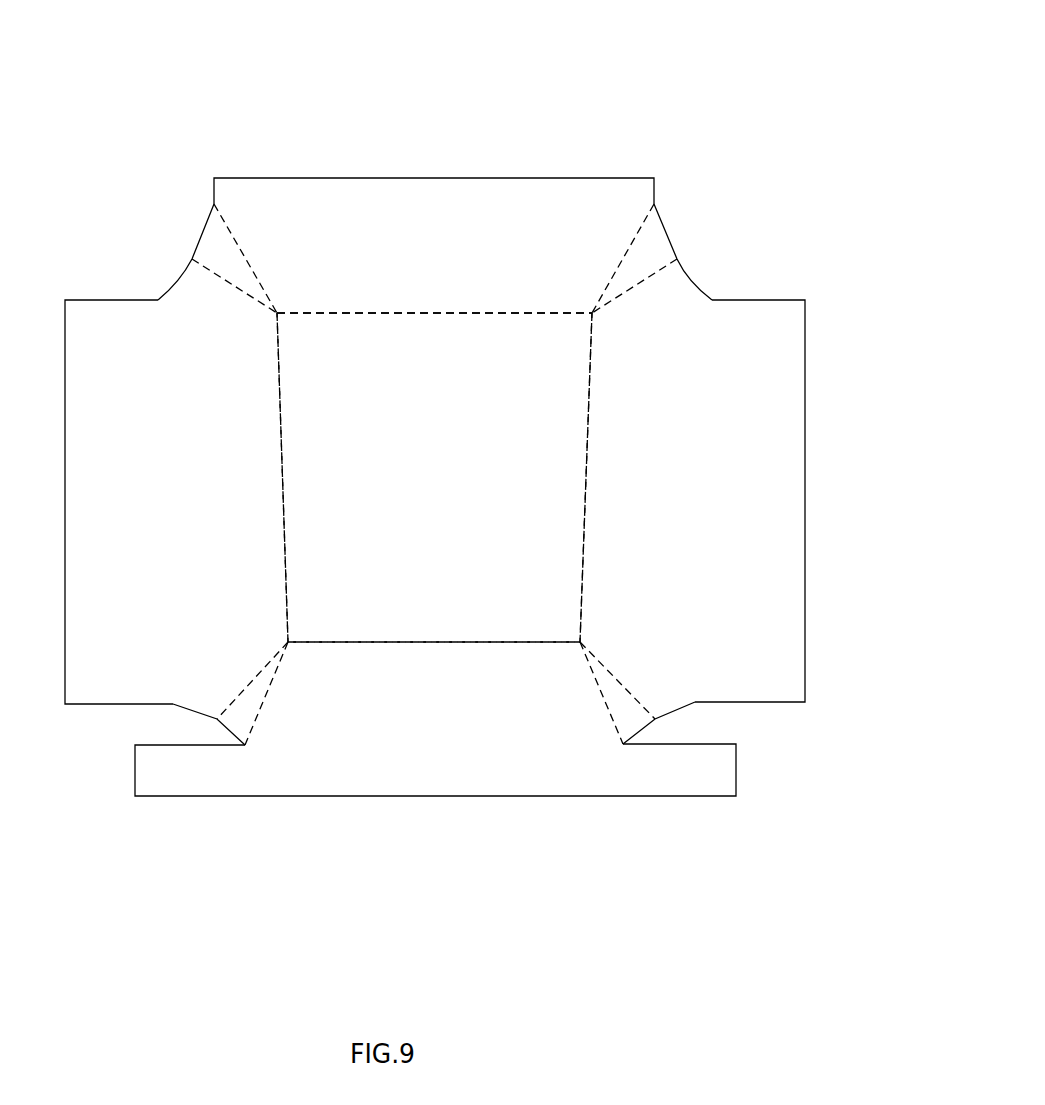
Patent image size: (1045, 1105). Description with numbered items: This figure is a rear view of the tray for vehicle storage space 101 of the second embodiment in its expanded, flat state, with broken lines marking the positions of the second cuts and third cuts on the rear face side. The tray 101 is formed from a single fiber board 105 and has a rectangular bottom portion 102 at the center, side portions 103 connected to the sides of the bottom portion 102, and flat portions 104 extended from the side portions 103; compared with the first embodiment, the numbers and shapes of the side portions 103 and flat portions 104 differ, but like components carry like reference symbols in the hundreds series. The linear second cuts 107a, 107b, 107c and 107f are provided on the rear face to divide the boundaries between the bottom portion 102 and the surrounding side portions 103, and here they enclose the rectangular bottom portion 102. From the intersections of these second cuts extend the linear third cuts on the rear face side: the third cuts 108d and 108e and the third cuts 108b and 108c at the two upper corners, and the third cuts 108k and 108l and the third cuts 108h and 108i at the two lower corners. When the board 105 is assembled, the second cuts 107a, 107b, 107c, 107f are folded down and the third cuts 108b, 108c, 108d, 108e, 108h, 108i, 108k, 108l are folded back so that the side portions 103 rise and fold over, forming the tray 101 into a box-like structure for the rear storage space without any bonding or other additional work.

The tray for vehicle storage space 101 is at (723, 37).
The bottom portion 102 is at (400, 350).
The side portions 103 is at (195, 448).
The flat portions 104 is at (668, 782).
The fiber board 105 is at (343, 178).
The second cut 107a is at (513, 313).
The second cut 107b is at (285, 457).
The second cut 107c is at (590, 455).
The second cut 107f is at (438, 642).
The third cut 108b is at (627, 250).
The third cut 108c is at (638, 287).
The third cut 108d is at (223, 280).
The third cut 108e is at (233, 240).
The third cut 108h is at (617, 682).
The third cut 108i is at (600, 688).
The third cut 108k is at (263, 673).
The third cut 108l is at (270, 692).